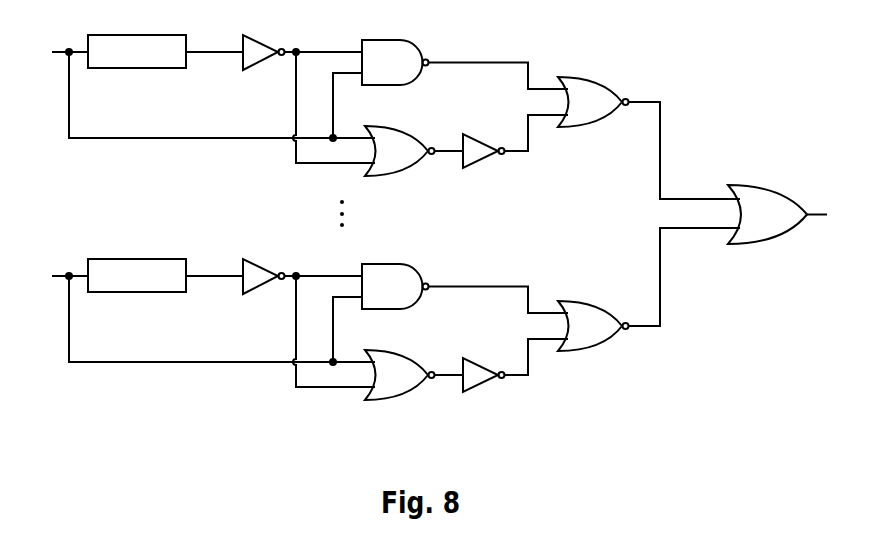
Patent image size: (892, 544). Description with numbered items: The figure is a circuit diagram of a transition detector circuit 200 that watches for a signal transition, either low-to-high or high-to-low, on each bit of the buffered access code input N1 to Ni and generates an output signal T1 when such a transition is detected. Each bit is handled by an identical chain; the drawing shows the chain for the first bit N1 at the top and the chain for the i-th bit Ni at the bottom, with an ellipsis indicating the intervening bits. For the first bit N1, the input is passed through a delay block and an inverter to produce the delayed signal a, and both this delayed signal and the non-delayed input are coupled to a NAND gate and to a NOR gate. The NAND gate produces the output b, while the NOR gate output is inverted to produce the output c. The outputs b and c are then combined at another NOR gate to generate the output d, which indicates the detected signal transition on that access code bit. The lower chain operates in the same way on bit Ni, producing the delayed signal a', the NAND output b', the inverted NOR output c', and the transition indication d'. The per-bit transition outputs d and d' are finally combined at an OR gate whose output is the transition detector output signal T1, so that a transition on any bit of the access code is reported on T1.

The transition detector circuit 200 is at (832, 38).
The buffered access code input bit N1 is at (58, 51).
The buffered access code input bit Ni is at (58, 275).
The delayed signal a is at (323, 42).
The delayed signal a' is at (323, 266).
The NAND gate output b is at (499, 67).
The NAND gate output b' is at (499, 291).
The inverted NOR gate output c is at (537, 145).
The inverted NOR gate output c' is at (537, 368).
The output indicating detected signal transition d is at (685, 150).
The output indicating detected signal transition d' is at (685, 278).
The output signal T1 is at (830, 214).